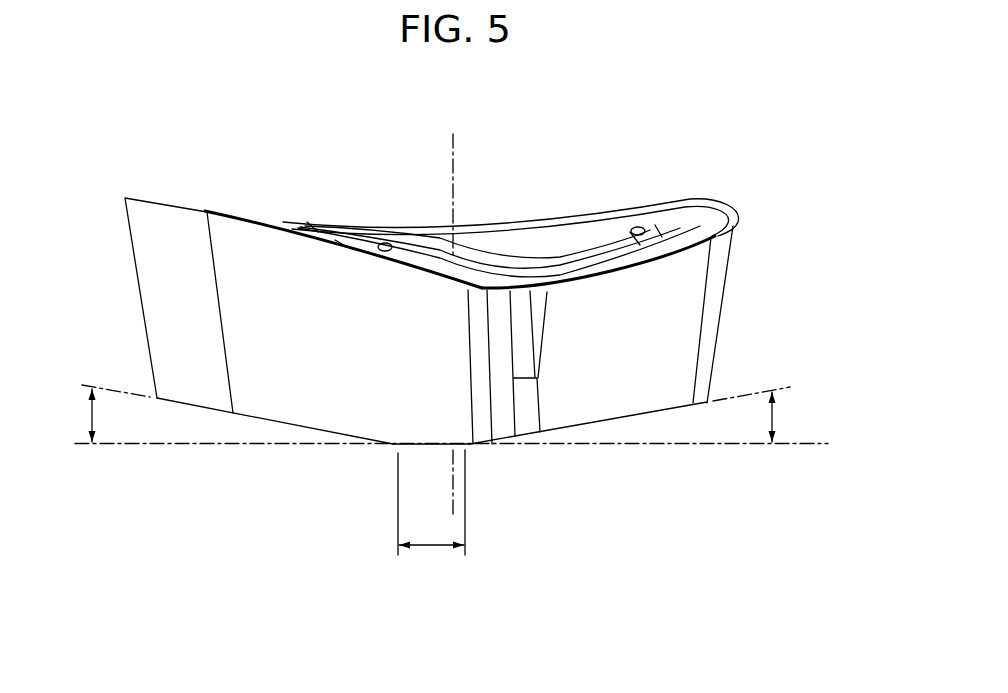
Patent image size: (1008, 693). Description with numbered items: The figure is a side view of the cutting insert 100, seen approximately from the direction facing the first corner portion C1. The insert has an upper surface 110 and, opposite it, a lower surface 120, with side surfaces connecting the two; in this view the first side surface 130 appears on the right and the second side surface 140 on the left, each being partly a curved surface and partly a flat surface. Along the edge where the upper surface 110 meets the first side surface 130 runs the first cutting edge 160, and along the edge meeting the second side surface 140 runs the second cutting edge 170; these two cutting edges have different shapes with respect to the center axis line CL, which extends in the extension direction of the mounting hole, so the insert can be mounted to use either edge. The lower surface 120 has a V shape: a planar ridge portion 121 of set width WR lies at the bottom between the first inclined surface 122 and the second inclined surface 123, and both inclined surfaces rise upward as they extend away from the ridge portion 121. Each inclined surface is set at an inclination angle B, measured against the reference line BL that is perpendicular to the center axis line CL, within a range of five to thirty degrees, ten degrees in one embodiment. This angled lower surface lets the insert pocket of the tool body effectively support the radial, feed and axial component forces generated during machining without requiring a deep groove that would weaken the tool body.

The cutting insert 100 is at (586, 125).
The upper surface 110 is at (677, 218).
The lower surface 120 is at (313, 440).
The ridge portion 121 is at (422, 447).
The first inclined surface 122 is at (616, 419).
The second inclined surface 123 is at (258, 419).
The first side surface 130 is at (673, 310).
The second side surface 140 is at (240, 310).
The first cutting edge 160 is at (717, 257).
The second cutting edge 170 is at (247, 222).
The first corner portion C1 is at (556, 295).
The inclination angle B is at (434, 413).
The reference line BL is at (466, 447).
The center axis line CL is at (452, 311).
The set width WR is at (431, 517).